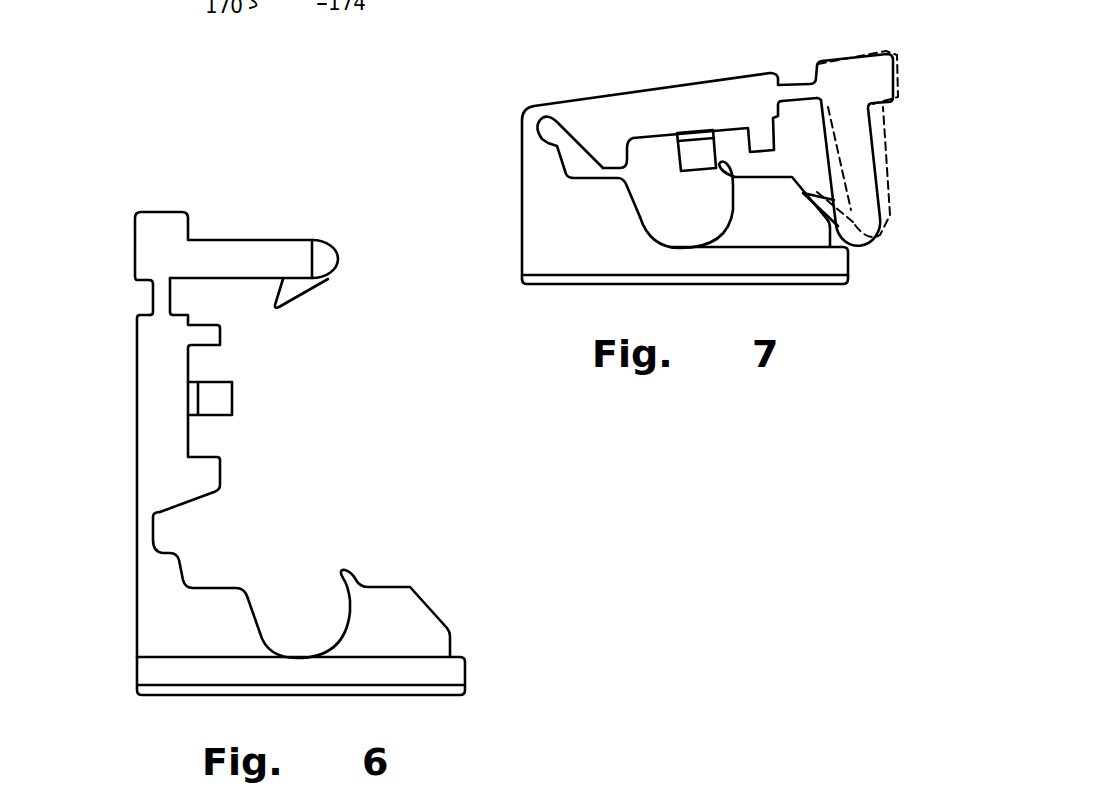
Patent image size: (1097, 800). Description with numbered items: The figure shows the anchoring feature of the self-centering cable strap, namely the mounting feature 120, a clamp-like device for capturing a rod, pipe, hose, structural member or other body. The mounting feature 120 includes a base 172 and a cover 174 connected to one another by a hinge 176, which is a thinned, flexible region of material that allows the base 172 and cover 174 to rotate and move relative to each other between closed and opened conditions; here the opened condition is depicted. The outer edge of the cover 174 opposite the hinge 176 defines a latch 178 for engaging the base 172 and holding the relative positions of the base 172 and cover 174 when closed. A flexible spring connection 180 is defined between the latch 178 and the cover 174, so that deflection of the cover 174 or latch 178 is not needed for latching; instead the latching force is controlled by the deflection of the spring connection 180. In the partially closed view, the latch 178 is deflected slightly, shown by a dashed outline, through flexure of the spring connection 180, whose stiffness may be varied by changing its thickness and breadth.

In FIG. 6, the mounting feature 120 is at (299, 433).
In FIG. 7, the mounting feature 120 is at (676, 171).
In FIG. 6, the base 172 is at (427, 620).
In FIG. 7, the base 172 is at (578, 253).
In FIG. 6, the cover 174 is at (137, 408).
In FIG. 7, the cover 174 is at (673, 98).
In FIG. 6, the hinge 176 is at (140, 528).
In FIG. 7, the hinge 176 is at (532, 114).
In FIG. 6, the latch 178 is at (250, 250).
In FIG. 7, the latch 178 is at (868, 164).
In FIG. 6, the spring connection 180 is at (155, 302).
In FIG. 7, the spring connection 180 is at (795, 90).